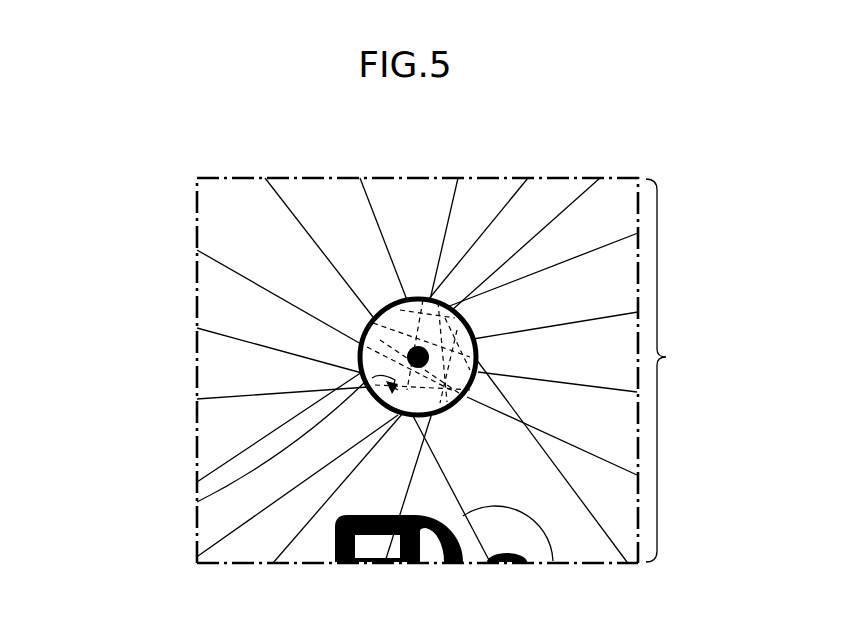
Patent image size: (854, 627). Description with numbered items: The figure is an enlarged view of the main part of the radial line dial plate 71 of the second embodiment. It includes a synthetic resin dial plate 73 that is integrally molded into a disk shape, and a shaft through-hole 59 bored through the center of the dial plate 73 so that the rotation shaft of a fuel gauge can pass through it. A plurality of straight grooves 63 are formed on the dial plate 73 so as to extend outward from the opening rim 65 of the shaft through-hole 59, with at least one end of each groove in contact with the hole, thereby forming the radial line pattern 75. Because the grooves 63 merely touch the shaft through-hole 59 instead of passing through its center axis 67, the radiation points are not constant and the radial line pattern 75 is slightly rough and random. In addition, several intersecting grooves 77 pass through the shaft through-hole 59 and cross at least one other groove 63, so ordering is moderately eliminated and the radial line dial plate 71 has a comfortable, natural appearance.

The shaft through-hole 59 is at (197, 502).
The grooves 63 is at (565, 213).
The opening rim 65 is at (453, 392).
The center axis 67 is at (407, 320).
The radial line dial plate 71 is at (190, 188).
The dial plate 73 is at (588, 548).
The radial line pattern 75 is at (673, 370).
The intersecting grooves 77 is at (497, 212).